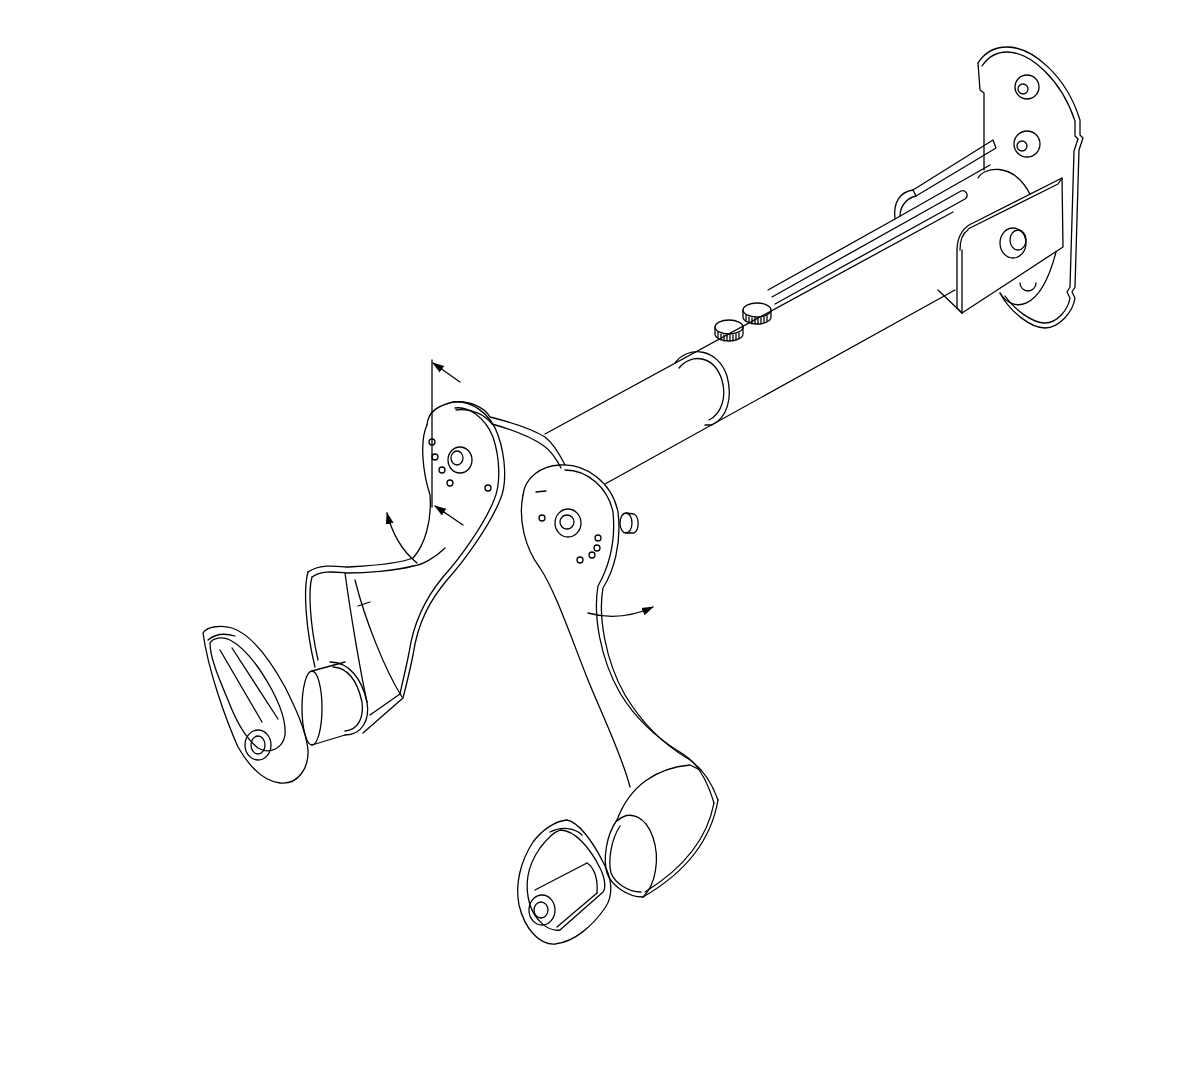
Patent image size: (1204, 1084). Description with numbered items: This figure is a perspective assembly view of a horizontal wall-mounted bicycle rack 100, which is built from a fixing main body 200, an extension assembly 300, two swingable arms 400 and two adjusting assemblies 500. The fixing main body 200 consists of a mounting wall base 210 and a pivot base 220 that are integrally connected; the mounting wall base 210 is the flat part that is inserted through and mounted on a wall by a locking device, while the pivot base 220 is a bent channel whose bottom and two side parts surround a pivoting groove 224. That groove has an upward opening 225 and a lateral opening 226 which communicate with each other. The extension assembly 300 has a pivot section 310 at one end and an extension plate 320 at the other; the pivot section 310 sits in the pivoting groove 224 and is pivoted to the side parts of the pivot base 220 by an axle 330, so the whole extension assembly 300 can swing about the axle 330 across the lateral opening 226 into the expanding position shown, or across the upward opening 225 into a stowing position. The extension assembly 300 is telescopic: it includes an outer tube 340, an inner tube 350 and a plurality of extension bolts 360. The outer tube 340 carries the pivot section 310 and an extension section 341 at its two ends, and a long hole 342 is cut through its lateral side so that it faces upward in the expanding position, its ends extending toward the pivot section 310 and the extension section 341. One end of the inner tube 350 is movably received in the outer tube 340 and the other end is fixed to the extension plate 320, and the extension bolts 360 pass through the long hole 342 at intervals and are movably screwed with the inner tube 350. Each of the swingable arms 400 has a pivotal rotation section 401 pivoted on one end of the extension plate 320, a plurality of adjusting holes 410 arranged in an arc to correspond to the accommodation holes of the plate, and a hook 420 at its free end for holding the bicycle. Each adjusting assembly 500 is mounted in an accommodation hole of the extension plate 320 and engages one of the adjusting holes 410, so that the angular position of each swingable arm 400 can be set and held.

The horizontal wall-mounted bicycle rack 100 is at (525, 212).
The fixing main body 200 is at (1100, 110).
The mounting wall base 210 is at (980, 75).
The pivot base 220 is at (988, 316).
The pivoting groove 224 is at (1020, 175).
The upward opening 225 is at (948, 177).
The lateral opening 226 is at (900, 208).
The extension assembly 300 is at (908, 430).
The pivot section 310 is at (987, 177).
The extension plate 320 is at (505, 412).
The axle 330 is at (1022, 242).
The outer tube 340 is at (840, 353).
The extension section 341 is at (737, 405).
The long hole 342 is at (797, 297).
The inner tube 350 is at (607, 393).
The extension bolts 360 is at (750, 310).
The swingable arms 400 is at (630, 686).
The pivotal rotation section 401 is at (540, 493).
The adjusting holes 410 is at (607, 551).
The hook 420 is at (333, 727).
The adjusting assemblies 500 is at (640, 522).